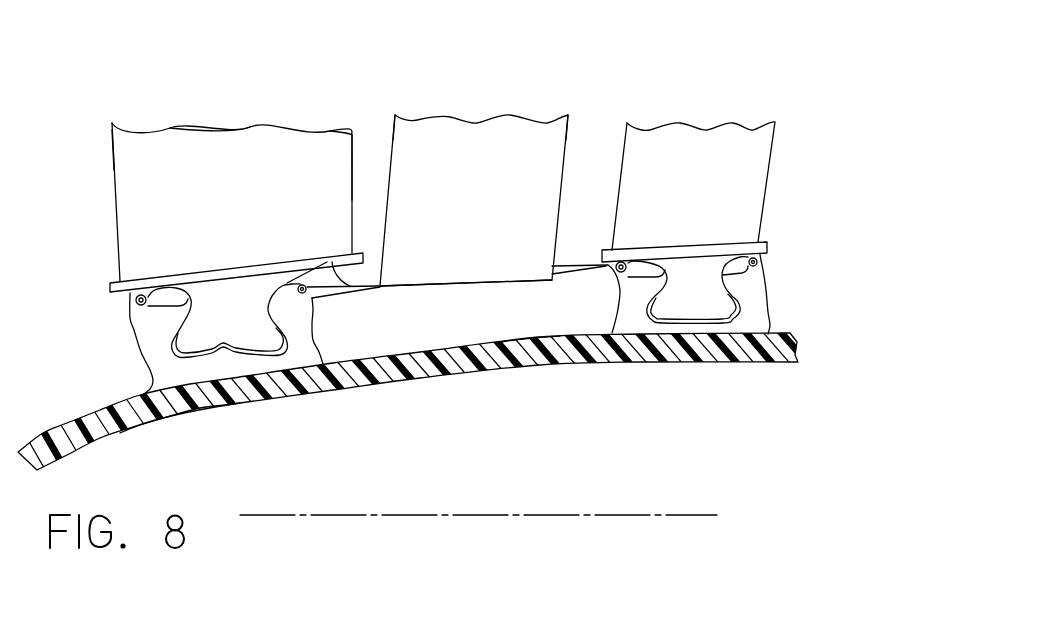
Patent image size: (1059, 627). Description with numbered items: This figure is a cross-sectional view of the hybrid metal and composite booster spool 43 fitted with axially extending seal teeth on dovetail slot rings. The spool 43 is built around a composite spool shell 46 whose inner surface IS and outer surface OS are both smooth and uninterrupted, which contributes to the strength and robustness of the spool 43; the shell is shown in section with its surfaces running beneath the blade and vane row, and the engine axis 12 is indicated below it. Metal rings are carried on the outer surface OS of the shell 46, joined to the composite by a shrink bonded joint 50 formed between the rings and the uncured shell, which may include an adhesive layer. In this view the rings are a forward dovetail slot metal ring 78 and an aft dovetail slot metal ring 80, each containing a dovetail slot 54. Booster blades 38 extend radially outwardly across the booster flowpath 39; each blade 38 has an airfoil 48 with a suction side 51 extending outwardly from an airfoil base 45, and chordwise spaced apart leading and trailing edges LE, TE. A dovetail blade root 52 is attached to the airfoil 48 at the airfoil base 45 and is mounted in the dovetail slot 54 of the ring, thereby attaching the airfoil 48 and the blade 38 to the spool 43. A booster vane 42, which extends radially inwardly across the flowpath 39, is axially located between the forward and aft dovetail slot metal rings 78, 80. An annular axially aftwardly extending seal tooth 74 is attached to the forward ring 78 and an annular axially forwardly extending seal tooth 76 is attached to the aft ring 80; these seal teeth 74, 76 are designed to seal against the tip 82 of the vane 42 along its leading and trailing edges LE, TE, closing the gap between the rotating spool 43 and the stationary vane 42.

The engine centerline axis 12 is at (622, 514).
The booster blade 38 is at (111, 126).
The booster flowpath 39 is at (578, 165).
The booster vane 42 is at (446, 209).
The booster spool 43 is at (395, 382).
The airfoil base 45 is at (233, 270).
The composite spool shell 46 is at (297, 398).
The airfoil 48 is at (353, 134).
The shrink bonded joint 50 is at (130, 380).
The suction side 51 is at (222, 152).
The dovetail blade root 52 is at (203, 333).
The dovetail slot 54 is at (285, 328).
The axially aftwardly extending seal tooth 74 is at (332, 252).
The axially forwardly extending seal tooth 76 is at (580, 264).
The forward dovetail slot metal ring 78 is at (294, 328).
The aft dovetail slot metal ring 80 is at (636, 302).
The vane tip 82 is at (457, 288).
The leading edge LE is at (111, 158).
The trailing edge TE is at (352, 180).
The inner surface IS is at (147, 424).
The outer surface OS is at (540, 337).